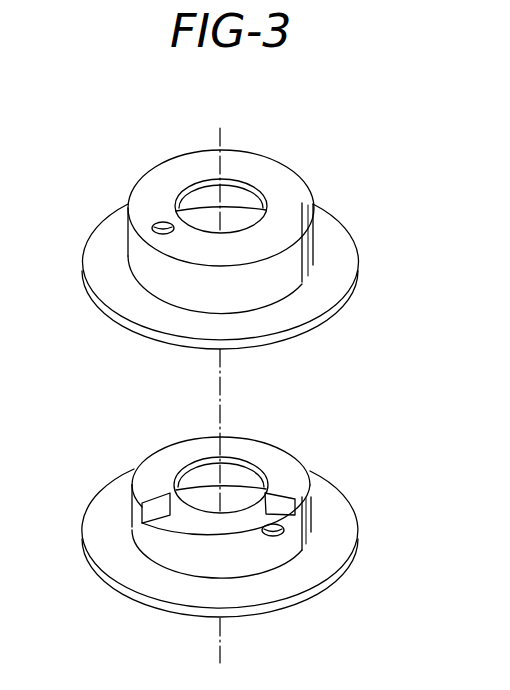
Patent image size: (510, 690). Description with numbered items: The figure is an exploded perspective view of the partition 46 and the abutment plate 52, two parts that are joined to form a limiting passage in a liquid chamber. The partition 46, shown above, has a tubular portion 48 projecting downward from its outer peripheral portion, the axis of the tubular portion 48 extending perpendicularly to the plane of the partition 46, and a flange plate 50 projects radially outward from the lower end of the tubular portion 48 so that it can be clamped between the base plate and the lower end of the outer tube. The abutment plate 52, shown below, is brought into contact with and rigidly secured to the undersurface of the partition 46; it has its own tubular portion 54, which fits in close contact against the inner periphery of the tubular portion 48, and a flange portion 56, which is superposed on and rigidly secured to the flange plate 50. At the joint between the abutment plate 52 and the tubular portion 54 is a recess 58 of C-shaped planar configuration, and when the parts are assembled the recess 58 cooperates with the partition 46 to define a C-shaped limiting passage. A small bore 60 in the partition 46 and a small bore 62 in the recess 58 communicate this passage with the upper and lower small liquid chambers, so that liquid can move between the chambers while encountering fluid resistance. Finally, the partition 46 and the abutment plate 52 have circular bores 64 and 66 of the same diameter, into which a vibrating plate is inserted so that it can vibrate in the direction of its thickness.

The partition 46 is at (298, 190).
The tubular portion 48 is at (134, 246).
The flange plate 50 is at (343, 257).
The abutment plate 52 is at (285, 465).
The tubular portion 54 is at (137, 512).
The flange portion 56 is at (317, 572).
The recess 58 is at (217, 549).
The small bore 60 is at (167, 223).
The small bore 62 is at (283, 537).
The circular bore 64 is at (237, 182).
The circular bore 66 is at (247, 462).